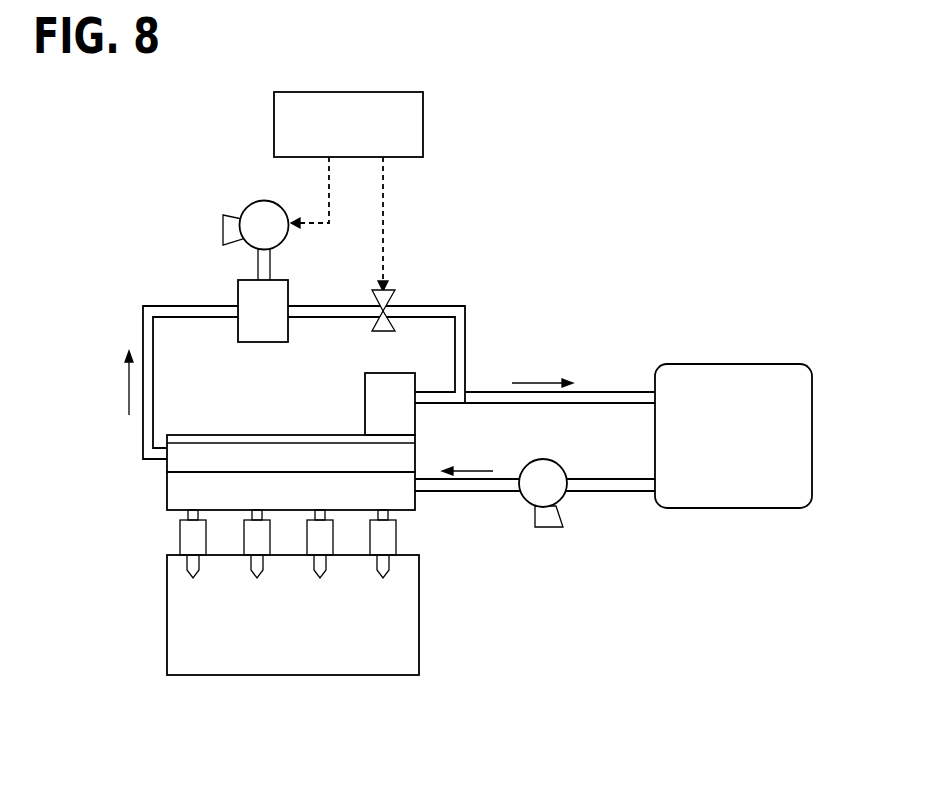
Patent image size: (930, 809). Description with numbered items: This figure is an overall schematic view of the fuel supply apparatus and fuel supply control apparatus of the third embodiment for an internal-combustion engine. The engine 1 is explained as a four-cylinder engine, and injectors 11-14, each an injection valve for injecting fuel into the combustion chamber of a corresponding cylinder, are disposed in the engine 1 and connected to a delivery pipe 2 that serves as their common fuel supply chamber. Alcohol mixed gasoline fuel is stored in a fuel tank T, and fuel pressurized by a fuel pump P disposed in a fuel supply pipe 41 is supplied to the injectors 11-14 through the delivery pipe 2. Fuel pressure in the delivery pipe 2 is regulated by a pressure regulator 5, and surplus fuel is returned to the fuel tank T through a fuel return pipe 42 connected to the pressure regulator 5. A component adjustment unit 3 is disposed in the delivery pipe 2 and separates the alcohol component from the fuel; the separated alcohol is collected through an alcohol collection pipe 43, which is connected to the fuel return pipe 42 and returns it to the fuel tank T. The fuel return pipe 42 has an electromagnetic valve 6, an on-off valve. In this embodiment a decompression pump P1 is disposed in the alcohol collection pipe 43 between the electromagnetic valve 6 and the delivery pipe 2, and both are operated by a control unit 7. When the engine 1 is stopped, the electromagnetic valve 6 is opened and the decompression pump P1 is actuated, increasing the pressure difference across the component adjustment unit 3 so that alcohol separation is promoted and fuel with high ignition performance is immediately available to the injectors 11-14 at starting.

The engine 1 is at (419, 625).
The delivery pipe 2 is at (167, 490).
The component adjustment unit 3 is at (397, 453).
The pressure regulator 5 is at (377, 373).
The electromagnetic valve 6 is at (398, 292).
The control unit 7 is at (423, 112).
The injectors 11-14 is at (193, 533).
The fuel supply pipe 41 is at (613, 479).
The fuel return pipe 42 is at (617, 392).
The alcohol collection pipe 43 is at (141, 422).
The fuel pump P is at (544, 459).
The decompression pump P1 is at (247, 205).
The fuel tank T is at (720, 364).